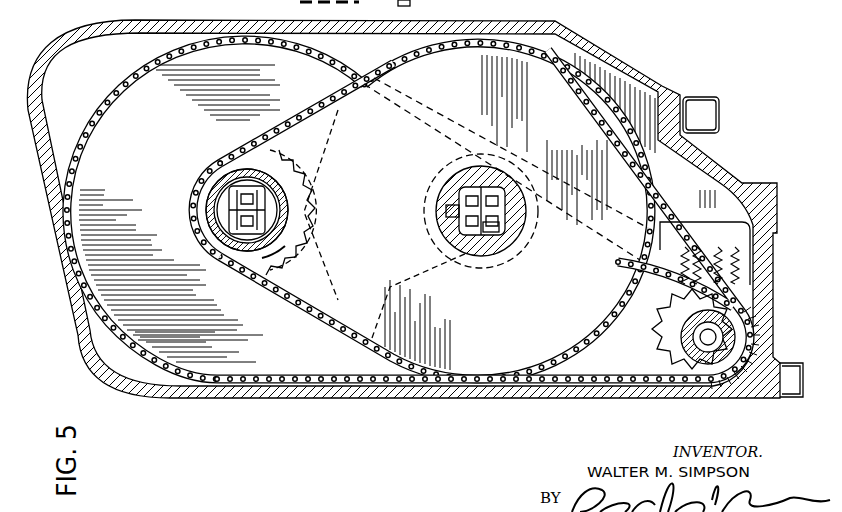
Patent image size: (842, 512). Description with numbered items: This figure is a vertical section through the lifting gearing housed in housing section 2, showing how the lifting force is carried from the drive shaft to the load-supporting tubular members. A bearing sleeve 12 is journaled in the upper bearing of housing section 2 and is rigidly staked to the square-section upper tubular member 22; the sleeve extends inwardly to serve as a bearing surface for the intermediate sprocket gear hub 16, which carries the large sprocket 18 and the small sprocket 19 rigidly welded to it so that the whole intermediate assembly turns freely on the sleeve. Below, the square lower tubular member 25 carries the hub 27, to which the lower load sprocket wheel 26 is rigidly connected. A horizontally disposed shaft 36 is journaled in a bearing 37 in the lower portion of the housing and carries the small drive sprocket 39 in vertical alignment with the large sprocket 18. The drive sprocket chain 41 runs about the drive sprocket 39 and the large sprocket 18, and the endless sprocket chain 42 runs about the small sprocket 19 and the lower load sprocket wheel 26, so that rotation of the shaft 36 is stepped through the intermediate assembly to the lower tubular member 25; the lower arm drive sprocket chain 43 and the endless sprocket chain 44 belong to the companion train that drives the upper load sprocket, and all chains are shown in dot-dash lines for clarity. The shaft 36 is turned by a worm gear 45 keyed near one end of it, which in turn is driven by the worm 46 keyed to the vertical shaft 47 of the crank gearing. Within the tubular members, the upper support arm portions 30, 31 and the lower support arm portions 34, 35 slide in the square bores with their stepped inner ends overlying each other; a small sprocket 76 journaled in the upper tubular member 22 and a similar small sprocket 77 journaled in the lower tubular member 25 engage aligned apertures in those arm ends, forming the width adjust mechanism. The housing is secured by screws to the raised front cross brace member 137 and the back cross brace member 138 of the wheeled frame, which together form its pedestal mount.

The housing section 2 is at (246, 22).
The raised front cross brace member 137 is at (699, 97).
The back cross brace member 138 is at (786, 398).
The large sprocket 18 is at (131, 170).
The lower load sprocket wheel 26 is at (361, 203).
The drive sprocket chain 41 is at (160, 358).
The endless sprocket chain 42 is at (308, 112).
The lower arm drive sprocket chain 43 is at (334, 246).
The upper tubular member 22 is at (247, 155).
The upper support arm portion 30 is at (307, 243).
The small sprocket 19 is at (276, 170).
The upper support arm portion 31 is at (206, 222).
The bearing sleeve 12 is at (212, 190).
The intermediate sprocket gear hub 16 is at (230, 174).
The small sprocket 76 is at (270, 260).
The small sprocket 77 is at (494, 184).
The hub 27 is at (452, 196).
The lower support arm portion 35 is at (455, 231).
The lower support arm portion 34 is at (497, 250).
The lower tubular member 25 is at (520, 240).
The endless sprocket chain 44 is at (431, 286).
The horizontally disposed shaft 36 is at (755, 317).
The bearing 37 is at (657, 328).
The small drive sprocket 39 is at (684, 318).
The worm gear 45 is at (654, 350).
The worm 46 is at (745, 250).
The vertical shaft 47 is at (664, 258).